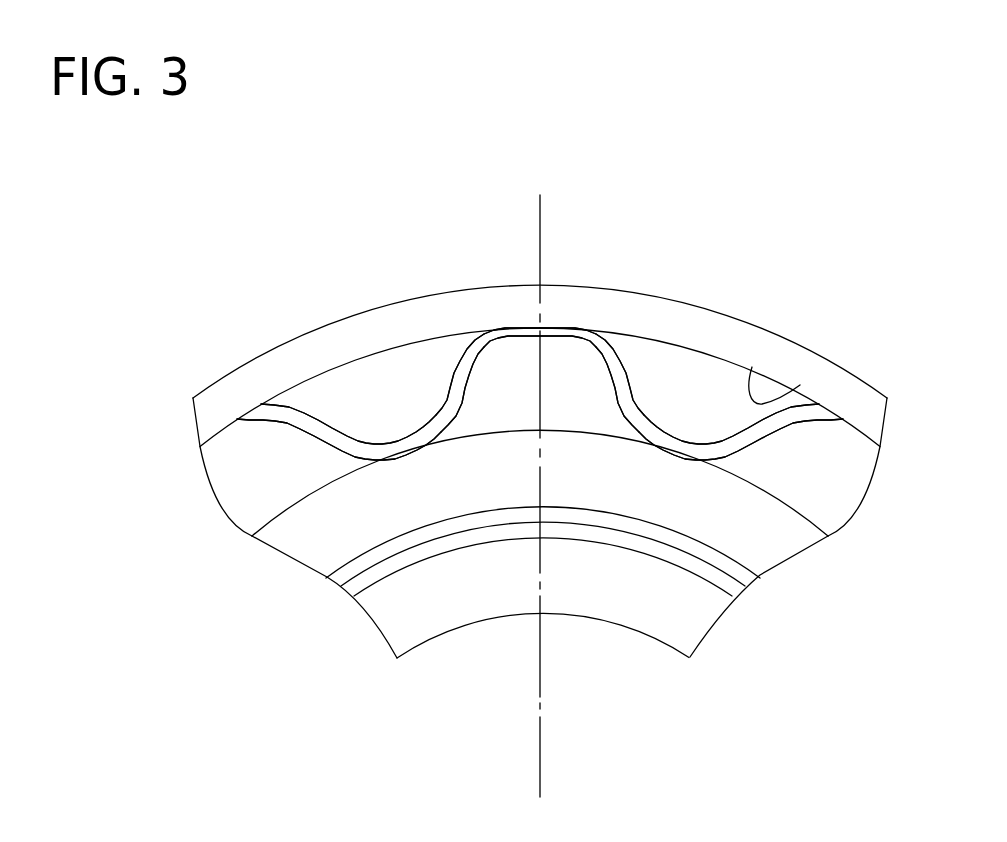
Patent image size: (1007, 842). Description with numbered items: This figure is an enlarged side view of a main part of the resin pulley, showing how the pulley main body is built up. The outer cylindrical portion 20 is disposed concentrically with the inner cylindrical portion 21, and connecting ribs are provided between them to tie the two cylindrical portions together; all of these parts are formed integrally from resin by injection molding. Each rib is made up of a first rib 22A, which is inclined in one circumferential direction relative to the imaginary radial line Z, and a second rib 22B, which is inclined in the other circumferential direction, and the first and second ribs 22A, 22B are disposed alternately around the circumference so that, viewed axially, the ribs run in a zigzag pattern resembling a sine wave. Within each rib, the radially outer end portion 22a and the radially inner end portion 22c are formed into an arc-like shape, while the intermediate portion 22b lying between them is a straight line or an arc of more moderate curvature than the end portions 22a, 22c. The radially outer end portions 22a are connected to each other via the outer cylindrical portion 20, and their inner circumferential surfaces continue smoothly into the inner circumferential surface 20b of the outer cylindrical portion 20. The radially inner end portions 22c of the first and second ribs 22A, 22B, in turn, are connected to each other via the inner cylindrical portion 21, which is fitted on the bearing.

The outer cylindrical portion 20 is at (497, 288).
The inner circumferential surface of the outer cylindrical portion 20b is at (800, 385).
The inner cylindrical portion 21 is at (353, 520).
The first rib 22A is at (466, 395).
The second rib 22B is at (614, 395).
The radially outer end portion 22a is at (483, 345).
The intermediate portion 22b is at (462, 375).
The radially inner end portion 22c is at (442, 422).
The radial line Z is at (540, 220).